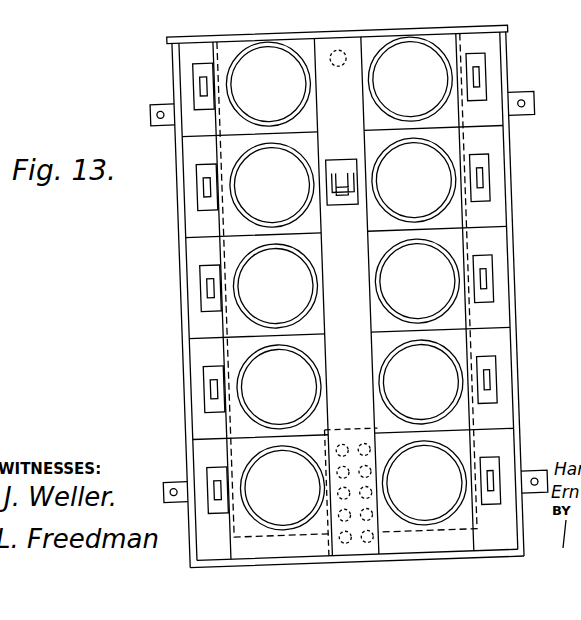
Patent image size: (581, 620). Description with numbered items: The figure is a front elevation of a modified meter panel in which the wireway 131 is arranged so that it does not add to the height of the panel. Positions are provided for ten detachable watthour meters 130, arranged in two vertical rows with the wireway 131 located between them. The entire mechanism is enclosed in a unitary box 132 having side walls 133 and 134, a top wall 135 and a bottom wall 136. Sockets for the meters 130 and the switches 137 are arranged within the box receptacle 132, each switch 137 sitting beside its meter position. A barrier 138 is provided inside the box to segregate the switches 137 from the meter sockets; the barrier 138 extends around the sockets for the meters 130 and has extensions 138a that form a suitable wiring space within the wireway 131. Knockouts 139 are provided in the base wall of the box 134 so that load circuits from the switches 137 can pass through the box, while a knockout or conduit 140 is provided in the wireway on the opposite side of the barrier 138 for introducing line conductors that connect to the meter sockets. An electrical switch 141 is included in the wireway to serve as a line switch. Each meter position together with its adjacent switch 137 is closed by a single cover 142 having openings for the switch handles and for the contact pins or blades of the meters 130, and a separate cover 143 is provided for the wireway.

The detachable watthour meters 130 is at (268, 59).
The wireway 131 is at (329, 49).
The unitary box 132 is at (509, 209).
The side wall 133 is at (180, 296).
The side wall 134 is at (517, 306).
The top wall 135 is at (198, 32).
The bottom wall 136 is at (484, 562).
The switches 137 is at (488, 67).
The barrier 138 is at (468, 146).
The extensions 138a is at (377, 453).
The knockouts 139 is at (358, 444).
The knockout or conduit 140 is at (352, 52).
The electrical switch 141 is at (349, 162).
The cover 142 is at (497, 92).
The separate cover 143 is at (323, 544).